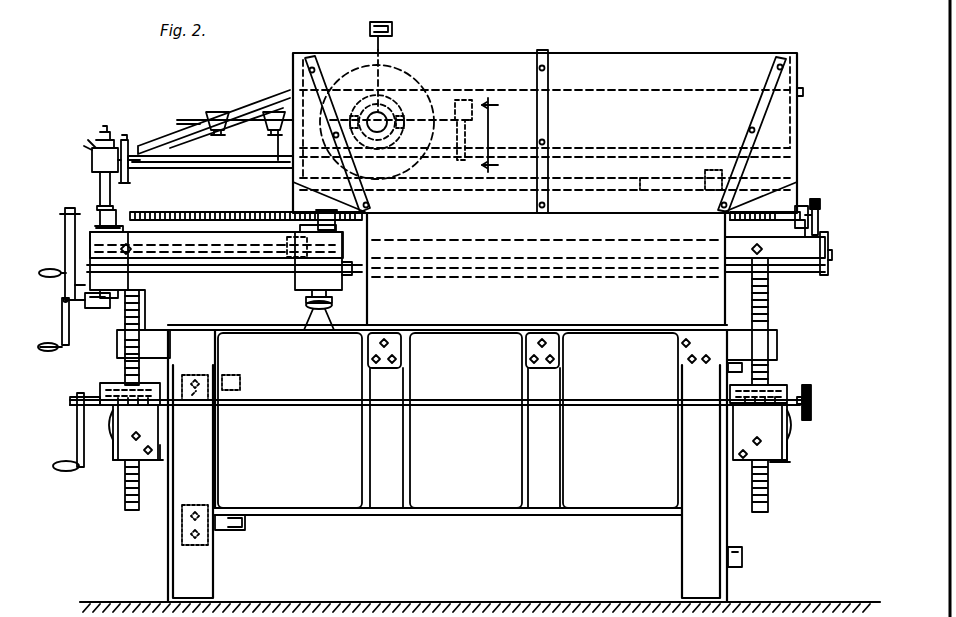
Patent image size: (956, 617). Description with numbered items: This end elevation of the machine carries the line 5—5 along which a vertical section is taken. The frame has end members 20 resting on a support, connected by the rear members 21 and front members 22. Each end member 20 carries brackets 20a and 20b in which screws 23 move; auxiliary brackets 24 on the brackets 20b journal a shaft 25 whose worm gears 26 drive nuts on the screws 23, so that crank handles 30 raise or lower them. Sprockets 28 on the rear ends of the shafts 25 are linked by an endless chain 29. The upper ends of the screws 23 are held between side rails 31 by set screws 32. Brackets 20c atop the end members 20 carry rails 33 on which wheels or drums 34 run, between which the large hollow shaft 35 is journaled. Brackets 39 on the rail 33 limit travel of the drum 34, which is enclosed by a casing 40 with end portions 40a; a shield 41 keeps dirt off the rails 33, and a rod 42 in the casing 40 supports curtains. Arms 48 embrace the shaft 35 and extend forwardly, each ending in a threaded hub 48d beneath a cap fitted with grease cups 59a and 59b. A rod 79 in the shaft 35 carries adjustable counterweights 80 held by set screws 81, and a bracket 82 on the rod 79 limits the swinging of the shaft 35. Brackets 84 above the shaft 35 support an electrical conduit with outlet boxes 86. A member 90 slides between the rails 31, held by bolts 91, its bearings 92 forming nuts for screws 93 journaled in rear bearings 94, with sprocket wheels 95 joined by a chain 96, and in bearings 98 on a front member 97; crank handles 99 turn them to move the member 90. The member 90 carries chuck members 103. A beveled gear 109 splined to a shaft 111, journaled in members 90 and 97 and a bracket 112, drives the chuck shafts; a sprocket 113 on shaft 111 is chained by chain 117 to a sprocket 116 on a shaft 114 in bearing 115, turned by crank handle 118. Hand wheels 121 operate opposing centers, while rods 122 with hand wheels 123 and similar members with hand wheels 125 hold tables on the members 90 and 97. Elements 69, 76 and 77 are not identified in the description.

The section line 5 is at (496, 136).
The end members 20 is at (633, 488).
The brackets 20a is at (117, 350).
The brackets 20b is at (156, 462).
The brackets 20c is at (546, 269).
The rear members 21 is at (745, 368).
The front members 22 is at (241, 380).
The screws 23 is at (125, 296).
The auxiliary brackets 24 is at (110, 420).
The shaft 25 is at (318, 406).
The worm gears 26 is at (158, 428).
The sprockets 28 is at (806, 385).
The endless chain 29 is at (804, 412).
The crank handles 30 is at (76, 431).
The side rails 31 is at (245, 258).
The set screws 32 is at (133, 245).
The rails 33 is at (641, 174).
The wheels or drums 34 is at (440, 100).
The hollow shaft 35 is at (386, 121).
The brackets 39 is at (708, 172).
The casing 40 is at (708, 62).
The end portions 40a is at (792, 135).
The shield 41 is at (545, 131).
The rod 42 is at (801, 90).
The arms 48 is at (246, 168).
The threaded hub 48d is at (100, 182).
The oil or grease cup 59a is at (108, 126).
The oil or grease cup 59b is at (88, 140).
The arm 69 is at (220, 170).
The link 76 is at (130, 165).
The rod 77 is at (129, 142).
The rod 79 is at (250, 124).
The counter-weights 80 is at (270, 112).
The set screws 81 is at (278, 162).
The bracket 82 is at (475, 130).
The brackets 84 is at (383, 40).
The outlet boxes 86 is at (390, 24).
The member 90 is at (308, 300).
The bolts 91 is at (298, 278).
The bearings 92 is at (316, 212).
The screws 93 is at (192, 210).
The bearings 94 is at (790, 209).
The sprocket wheels 95 is at (815, 203).
The endless chain 96 is at (815, 198).
The member 97 is at (130, 282).
The bearings 98 is at (118, 212).
The crank handles 99 is at (64, 226).
The chuck or gripping members 103 is at (288, 240).
The beveled gear 109 is at (348, 277).
The shaft 111 is at (213, 273).
The bracket 112 is at (824, 272).
The sprocket wheel 113 is at (66, 280).
The shaft 114 is at (61, 300).
The bearing 115 is at (103, 307).
The sprocket 116 is at (78, 305).
The sprocket chain 117 is at (69, 345).
The crank handle 118 is at (47, 352).
The hand wheels 121 is at (90, 241).
The rods 122 is at (336, 329).
The hand wheels 123 is at (306, 327).
The hand wheels 125 is at (140, 312).